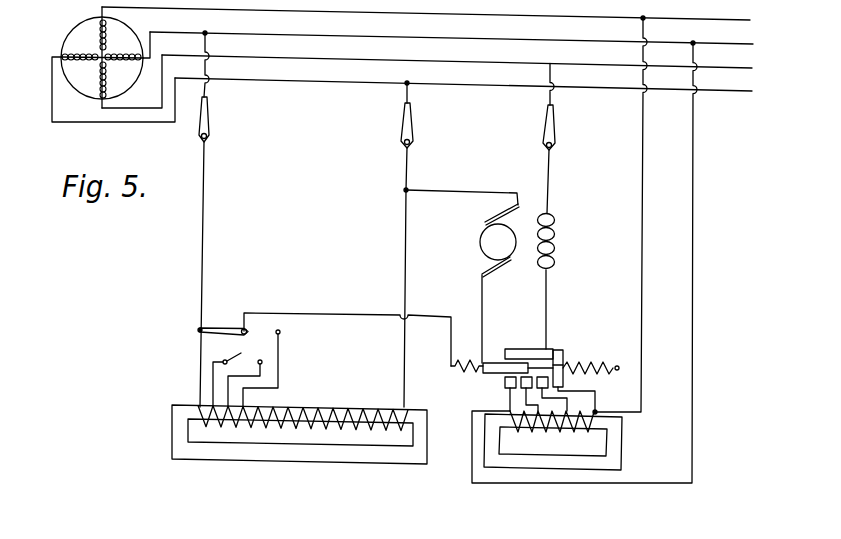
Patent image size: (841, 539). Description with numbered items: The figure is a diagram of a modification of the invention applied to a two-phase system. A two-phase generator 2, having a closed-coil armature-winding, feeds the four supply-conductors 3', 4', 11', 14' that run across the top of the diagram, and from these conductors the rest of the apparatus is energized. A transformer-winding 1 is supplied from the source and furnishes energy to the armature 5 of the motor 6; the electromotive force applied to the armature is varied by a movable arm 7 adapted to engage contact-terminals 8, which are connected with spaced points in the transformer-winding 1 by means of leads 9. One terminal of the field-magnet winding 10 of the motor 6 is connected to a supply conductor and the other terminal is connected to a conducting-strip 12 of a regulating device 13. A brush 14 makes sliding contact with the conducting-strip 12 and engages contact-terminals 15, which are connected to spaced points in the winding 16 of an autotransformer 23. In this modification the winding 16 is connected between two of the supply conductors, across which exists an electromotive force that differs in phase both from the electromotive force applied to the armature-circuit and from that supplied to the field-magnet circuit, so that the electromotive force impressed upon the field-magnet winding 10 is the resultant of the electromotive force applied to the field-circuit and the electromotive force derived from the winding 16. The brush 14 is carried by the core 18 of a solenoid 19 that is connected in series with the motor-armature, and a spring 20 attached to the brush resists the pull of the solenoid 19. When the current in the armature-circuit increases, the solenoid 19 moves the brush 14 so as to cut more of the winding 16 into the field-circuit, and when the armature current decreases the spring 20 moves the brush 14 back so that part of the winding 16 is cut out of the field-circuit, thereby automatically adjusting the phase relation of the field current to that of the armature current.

The transformer-winding 1 is at (330, 403).
The two-phase generator 2 is at (67, 34).
The supply conductor 3' is at (463, 95).
The supply conductor 4' is at (451, 48).
The supply conductor 11' is at (457, 70).
The supply conductor 14' is at (426, 23).
The armature 5 is at (479, 243).
The motor 6 is at (527, 218).
The movable arm 7 is at (227, 326).
The contact-terminals 8 is at (237, 371).
The leads 9 is at (279, 365).
The field-magnet winding 10 is at (560, 218).
The conducting-strip 12 is at (519, 350).
The regulating device 13 is at (575, 383).
The brush 14 is at (562, 351).
The contact-terminals 15 is at (505, 378).
The winding 16 is at (508, 397).
The core 18 is at (495, 362).
The solenoid 19 is at (451, 366).
The spring 20 is at (591, 353).
The autotransformer 23 is at (610, 445).